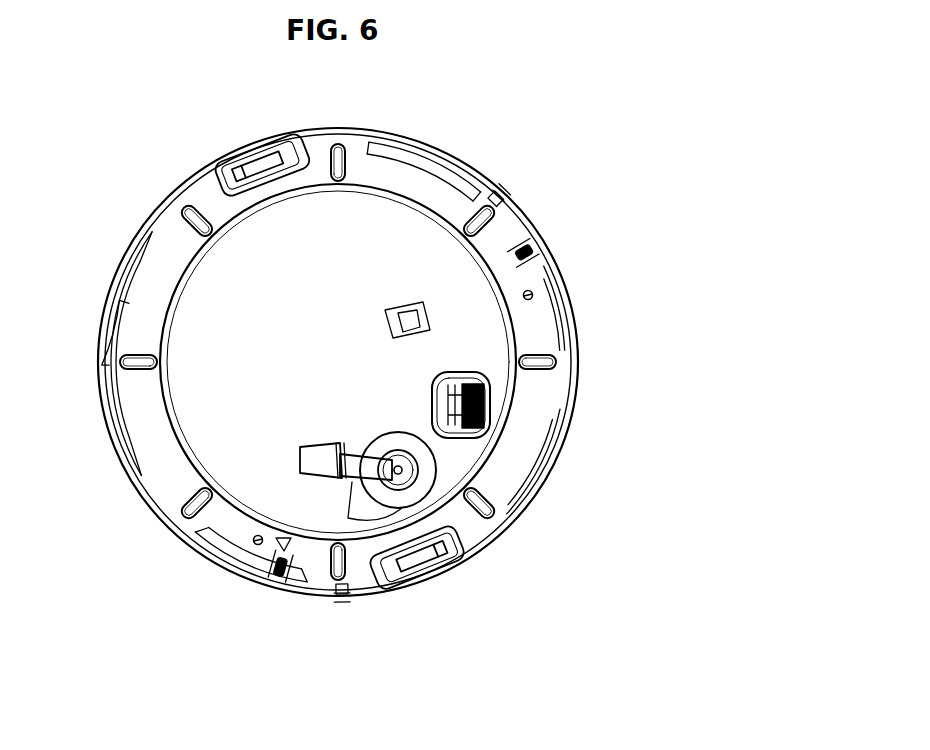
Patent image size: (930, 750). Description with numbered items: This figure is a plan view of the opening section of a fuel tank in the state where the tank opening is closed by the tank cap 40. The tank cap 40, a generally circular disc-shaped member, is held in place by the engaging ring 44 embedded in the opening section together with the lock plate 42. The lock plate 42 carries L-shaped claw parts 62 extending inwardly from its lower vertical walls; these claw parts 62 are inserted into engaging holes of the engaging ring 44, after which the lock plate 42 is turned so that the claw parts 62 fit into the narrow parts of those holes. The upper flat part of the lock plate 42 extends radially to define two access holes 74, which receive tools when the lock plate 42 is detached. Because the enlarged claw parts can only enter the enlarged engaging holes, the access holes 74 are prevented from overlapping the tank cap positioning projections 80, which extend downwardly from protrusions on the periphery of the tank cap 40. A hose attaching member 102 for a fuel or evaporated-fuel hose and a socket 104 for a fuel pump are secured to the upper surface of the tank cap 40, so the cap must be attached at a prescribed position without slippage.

The tank cap 40 is at (216, 376).
The lock plate 42 is at (166, 275).
The engaging ring 44 is at (136, 466).
The claw part 62 is at (508, 208).
The access hole 74 is at (232, 162).
The tank cap positioning projection 80 is at (530, 252).
The hose attaching member 102 is at (402, 470).
The socket 104 is at (486, 388).